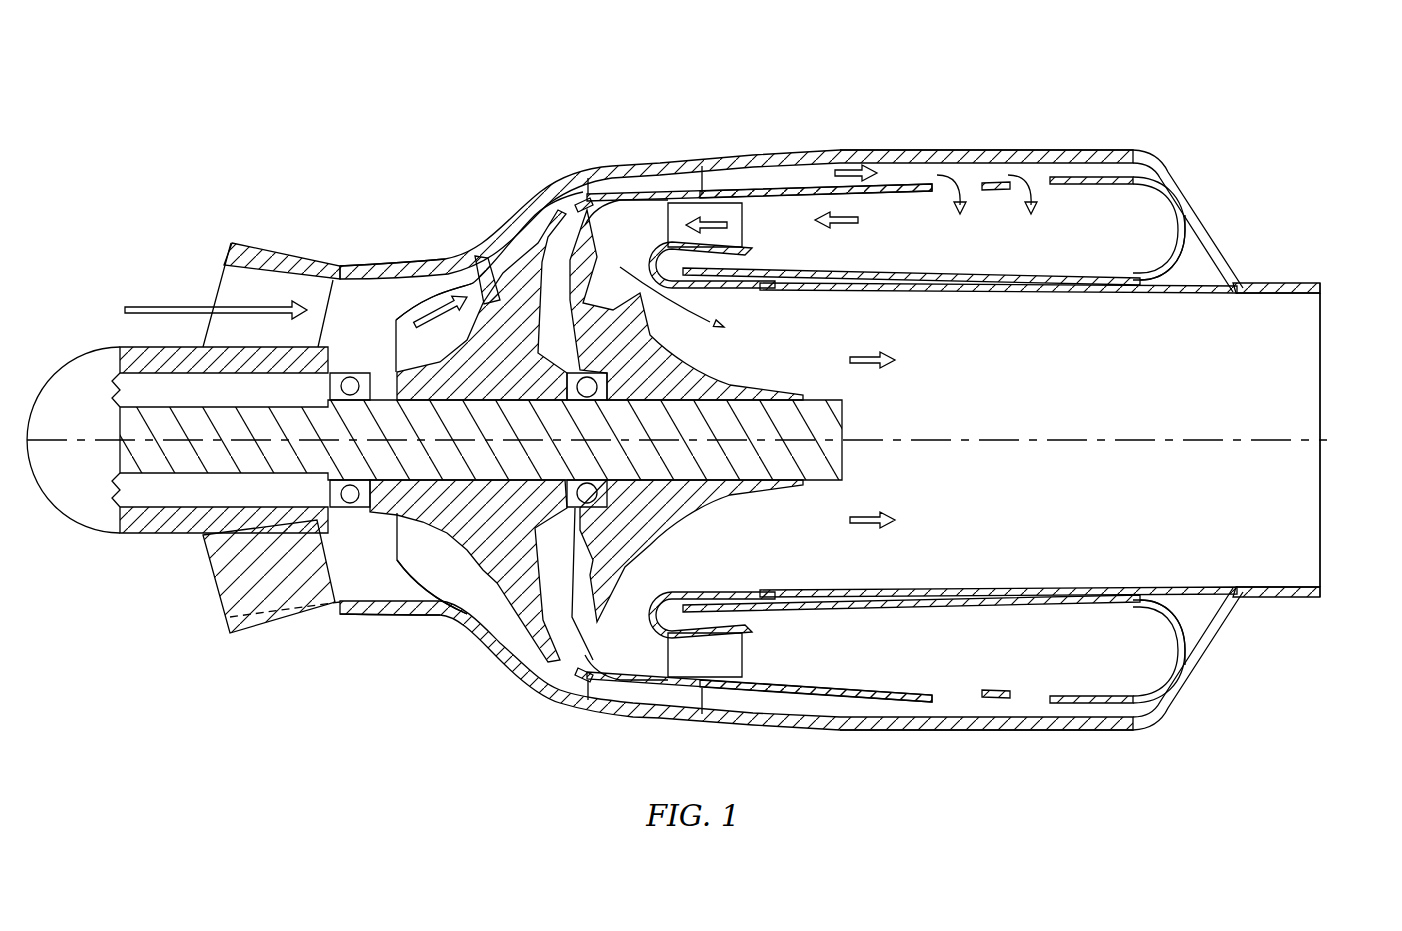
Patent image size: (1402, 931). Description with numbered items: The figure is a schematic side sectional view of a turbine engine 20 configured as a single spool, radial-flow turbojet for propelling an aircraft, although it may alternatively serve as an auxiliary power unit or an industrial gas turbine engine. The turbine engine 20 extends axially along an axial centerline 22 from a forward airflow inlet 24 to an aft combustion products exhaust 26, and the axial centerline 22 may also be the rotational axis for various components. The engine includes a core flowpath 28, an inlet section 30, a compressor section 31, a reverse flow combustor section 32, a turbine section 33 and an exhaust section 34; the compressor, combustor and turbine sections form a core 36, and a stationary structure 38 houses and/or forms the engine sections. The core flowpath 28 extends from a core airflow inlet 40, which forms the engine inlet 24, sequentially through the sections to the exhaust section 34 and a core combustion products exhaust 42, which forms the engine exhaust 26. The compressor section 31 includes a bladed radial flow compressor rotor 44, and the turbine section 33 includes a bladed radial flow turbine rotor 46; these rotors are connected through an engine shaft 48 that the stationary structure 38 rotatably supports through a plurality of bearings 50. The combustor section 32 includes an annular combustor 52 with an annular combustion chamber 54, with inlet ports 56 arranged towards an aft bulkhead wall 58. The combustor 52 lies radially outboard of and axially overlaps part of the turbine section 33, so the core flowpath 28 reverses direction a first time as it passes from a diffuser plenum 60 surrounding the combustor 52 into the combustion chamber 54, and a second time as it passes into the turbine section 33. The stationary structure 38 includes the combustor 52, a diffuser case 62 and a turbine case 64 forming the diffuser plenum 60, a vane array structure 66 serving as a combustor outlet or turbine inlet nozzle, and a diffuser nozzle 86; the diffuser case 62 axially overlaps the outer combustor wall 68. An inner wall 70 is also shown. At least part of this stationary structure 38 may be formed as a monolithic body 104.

The turbine engine 20 is at (205, 112).
The axial centerline 22 is at (1225, 442).
The airflow inlet 24 is at (215, 285).
The combustion products exhaust 26 is at (1355, 440).
The core flowpath 28 is at (962, 394).
The inlet section 30 is at (270, 240).
The compressor section 31 is at (443, 245).
The combustor section 32 is at (872, 142).
The turbine section 33 is at (625, 233).
The exhaust section 34 is at (1280, 278).
The core 36 is at (758, 144).
The stationary structure 38 is at (526, 186).
The airflow inlet 40 is at (218, 438).
The combustion products exhaust 42 is at (1320, 375).
The compressor rotor 44 is at (443, 525).
The turbine rotor 46 is at (700, 510).
The engine shaft 48 is at (845, 460).
The bearings 50 is at (343, 512).
The combustor 52 is at (905, 183).
The combustion chamber 54 is at (940, 259).
The inlet ports 56 is at (973, 192).
The bulkhead wall 58 is at (1178, 222).
The diffuser plenum 60 is at (818, 175).
The diffuser case 62 is at (1022, 148).
The turbine case 64 is at (932, 290).
The vane array structure 66 is at (752, 233).
The outer combustor wall 68 is at (1095, 178).
The inner duct wall 70 is at (1038, 285).
The diffuser nozzle 86 is at (580, 190).
The monolithic body 104 is at (462, 364).